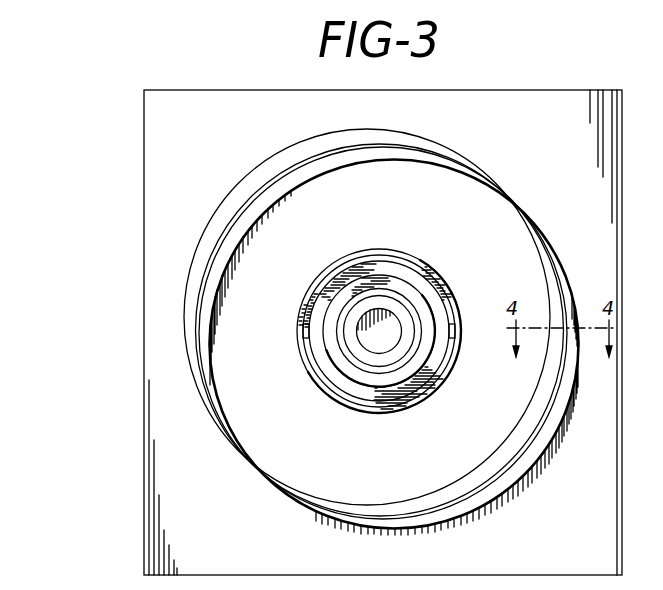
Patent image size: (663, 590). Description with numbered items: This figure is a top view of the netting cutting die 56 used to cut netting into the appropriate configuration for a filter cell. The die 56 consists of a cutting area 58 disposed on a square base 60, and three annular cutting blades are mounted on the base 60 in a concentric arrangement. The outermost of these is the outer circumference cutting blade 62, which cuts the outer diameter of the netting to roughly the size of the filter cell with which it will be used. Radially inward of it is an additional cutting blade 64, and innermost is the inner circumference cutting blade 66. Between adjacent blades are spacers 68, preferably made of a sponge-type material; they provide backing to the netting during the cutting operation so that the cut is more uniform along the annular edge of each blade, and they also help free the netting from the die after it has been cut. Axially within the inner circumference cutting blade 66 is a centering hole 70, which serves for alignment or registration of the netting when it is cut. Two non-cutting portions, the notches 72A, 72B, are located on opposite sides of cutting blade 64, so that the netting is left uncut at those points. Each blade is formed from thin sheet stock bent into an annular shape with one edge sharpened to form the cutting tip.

The netting cutting die 56 is at (144, 213).
The cutting area 58 is at (222, 183).
The base 60 is at (560, 100).
The outer circumference cutting blade 62 is at (497, 184).
The cutting blade 64 is at (429, 291).
The inner circumference cutting blade 66 is at (353, 378).
The spacers 68 is at (274, 160).
The centering hole 70 is at (387, 311).
The notch 72A is at (304, 333).
The notch 72B is at (453, 333).